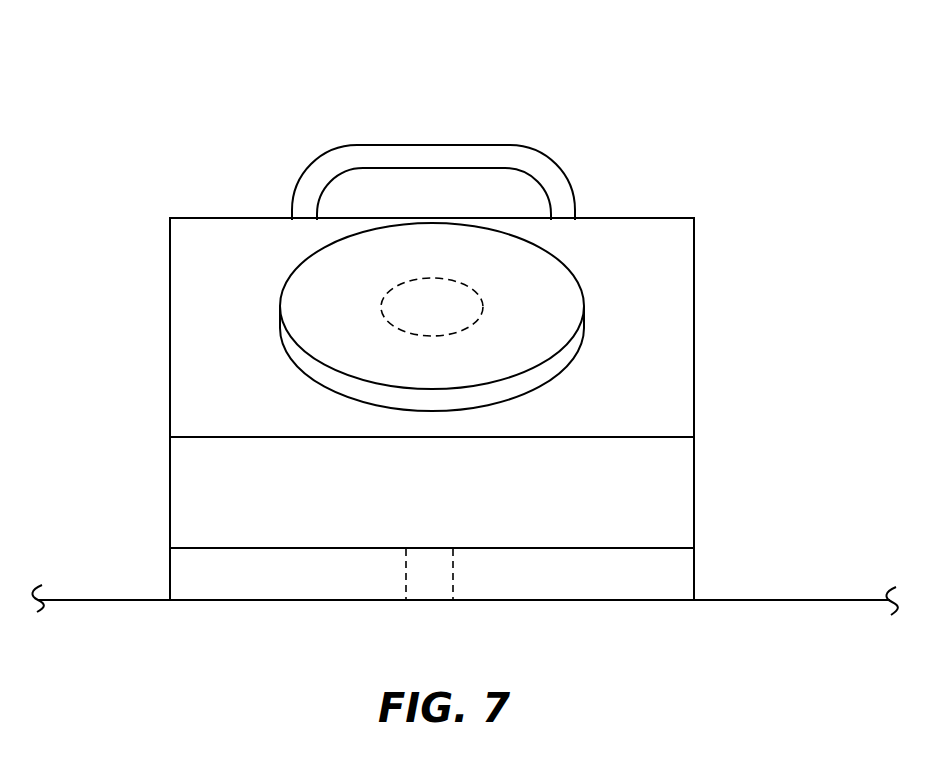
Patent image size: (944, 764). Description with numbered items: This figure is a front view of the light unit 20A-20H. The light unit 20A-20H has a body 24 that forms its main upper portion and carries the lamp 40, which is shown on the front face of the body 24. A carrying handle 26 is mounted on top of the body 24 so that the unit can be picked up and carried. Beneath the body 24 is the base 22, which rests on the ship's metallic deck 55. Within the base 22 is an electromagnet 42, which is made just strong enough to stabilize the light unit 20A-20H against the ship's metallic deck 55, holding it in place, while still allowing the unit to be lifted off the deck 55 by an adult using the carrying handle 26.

The light unit 20A-20H is at (484, 136).
The base 22 is at (675, 577).
The body 24 is at (677, 310).
The carrying handle 26 is at (404, 158).
The lamp 40 is at (458, 377).
The electromagnet 42 is at (427, 589).
The ship's metallic deck 55 is at (830, 604).